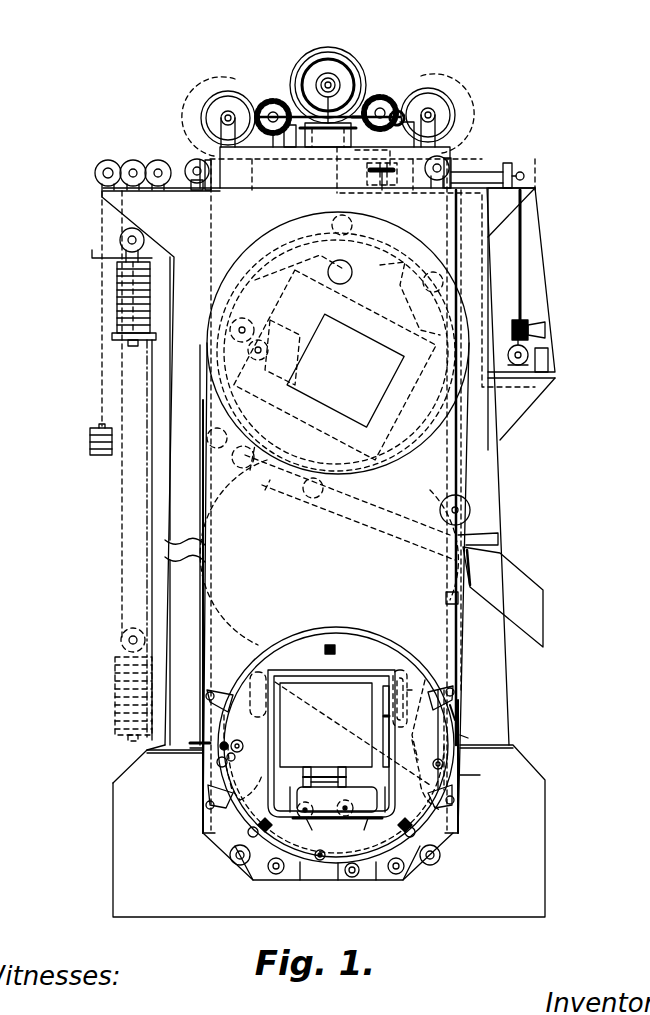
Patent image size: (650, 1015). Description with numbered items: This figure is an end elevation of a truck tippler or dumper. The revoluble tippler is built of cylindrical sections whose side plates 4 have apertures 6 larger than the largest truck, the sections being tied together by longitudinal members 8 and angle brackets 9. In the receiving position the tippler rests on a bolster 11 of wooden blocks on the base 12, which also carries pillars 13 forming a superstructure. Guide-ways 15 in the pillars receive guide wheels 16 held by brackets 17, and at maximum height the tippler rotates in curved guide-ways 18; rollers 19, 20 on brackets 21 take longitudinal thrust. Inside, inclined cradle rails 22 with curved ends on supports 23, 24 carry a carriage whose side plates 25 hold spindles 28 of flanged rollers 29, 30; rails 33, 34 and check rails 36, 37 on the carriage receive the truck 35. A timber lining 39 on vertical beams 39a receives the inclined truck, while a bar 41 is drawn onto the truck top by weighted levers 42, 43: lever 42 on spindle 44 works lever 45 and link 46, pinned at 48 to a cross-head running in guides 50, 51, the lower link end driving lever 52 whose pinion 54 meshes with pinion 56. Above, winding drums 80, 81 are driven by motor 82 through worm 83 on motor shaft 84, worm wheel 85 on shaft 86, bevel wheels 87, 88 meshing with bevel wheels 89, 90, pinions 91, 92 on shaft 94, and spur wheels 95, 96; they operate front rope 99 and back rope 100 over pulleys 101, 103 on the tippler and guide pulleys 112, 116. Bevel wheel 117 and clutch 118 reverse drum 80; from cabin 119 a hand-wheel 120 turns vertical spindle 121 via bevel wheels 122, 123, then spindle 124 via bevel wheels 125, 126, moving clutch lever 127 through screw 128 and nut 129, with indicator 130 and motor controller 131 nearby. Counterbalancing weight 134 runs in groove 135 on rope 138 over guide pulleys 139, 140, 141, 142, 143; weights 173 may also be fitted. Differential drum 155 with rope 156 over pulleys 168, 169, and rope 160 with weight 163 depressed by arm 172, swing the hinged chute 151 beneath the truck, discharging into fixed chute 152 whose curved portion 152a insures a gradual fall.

The side plate 4 is at (300, 636).
The aperture 6 is at (262, 796).
The longitudinal member 8 is at (330, 645).
The angle bracket 9 is at (268, 830).
The bolster 11 is at (238, 852).
The base 12 is at (329, 831).
The pillar 13 is at (192, 528).
The guide-way 15 is at (460, 465).
The guide wheel 16 is at (235, 683).
The bracket 17 is at (432, 684).
The curved guide-way 18 is at (252, 232).
The roller 19 is at (202, 760).
The roller 20 is at (444, 765).
The bracket 21 is at (452, 730).
The rail 22 is at (318, 816).
The support 23 is at (383, 803).
The support 24 is at (290, 803).
The side plate 25 is at (344, 816).
The spindle 28 is at (310, 830).
The flanged roller 29 is at (368, 830).
The flanged roller 30 is at (303, 816).
The rail 33 is at (344, 766).
The rail 34 is at (305, 768).
The truck 35 is at (352, 733).
The check rail 36 is at (334, 766).
The check rail 37 is at (335, 782).
The timber lining 39 is at (383, 696).
The vertical beam 39a is at (383, 716).
The bar 41 is at (352, 670).
The weighted lever 42 is at (438, 770).
The weighted lever 43 is at (228, 764).
The spindle 44 is at (318, 189).
The lever 45 is at (455, 714).
The link 46 is at (413, 736).
The pin 48 is at (400, 665).
The vertical guide 50 is at (410, 668).
The vertical guide 51 is at (263, 660).
The lever 52 is at (243, 746).
The pinion 54 is at (240, 752).
The pinion 56 is at (226, 742).
The winding drum 80 is at (438, 100).
The winding drum 81 is at (216, 100).
The motor 82 is at (334, 47).
The worm 83 is at (350, 68).
The motor shaft 84 is at (322, 76).
The worm wheel 85 is at (318, 86).
The shaft 86 is at (305, 125).
The bevel wheel 87 is at (366, 110).
The bevel wheel 88 is at (263, 103).
The bevel wheel 89 is at (385, 99).
The bevel wheel 90 is at (268, 115).
The pinion 91 is at (390, 108).
The pinion 92 is at (290, 140).
The shaft 94 is at (273, 148).
The spur wheel 95 is at (468, 110).
The spur wheel 96 is at (190, 97).
The front rope 99 is at (457, 152).
The back rope 100 is at (212, 143).
The guide pulley 101 is at (468, 738).
The guide pulley 103 is at (480, 774).
The guide pulley 112 is at (452, 172).
The guide pulley 116 is at (200, 160).
The bevel wheel 117 is at (410, 120).
The clutch 118 is at (398, 110).
The cabin 119 is at (530, 404).
The hand-wheel 120 is at (530, 357).
The vertical spindle 121 is at (522, 283).
The bevel wheel 122 is at (517, 378).
The bevel wheel 123 is at (510, 350).
The spindle 124 is at (478, 172).
The bevel wheel 125 is at (527, 176).
The bevel wheel 126 is at (512, 170).
The clutch lever 127 is at (378, 162).
The screw 128 is at (385, 186).
The nut 129 is at (372, 187).
The indicator 130 is at (546, 326).
The controller 131 is at (553, 370).
The counterbalancing weight 134 is at (117, 300).
The groove 135 is at (153, 403).
The counterbalancing rope 138 is at (252, 190).
The guide pulley 139 is at (447, 181).
The guide pulley 140 is at (196, 186).
The guide pulley 141 is at (145, 240).
The guide pulley 142 is at (133, 160).
The guide pulley 143 is at (195, 166).
The hinged chute 151 is at (446, 598).
The fixed chute 152 is at (537, 590).
The curved portion 152a is at (471, 577).
The differential drum 155 is at (103, 172).
The rope 156 is at (106, 162).
The rope 160 is at (102, 372).
The weight 163 is at (90, 441).
The guide pulley 168 is at (218, 840).
The guide pulley 169 is at (212, 186).
The arm 172 is at (93, 255).
The counterbalancing weight 173 is at (460, 538).